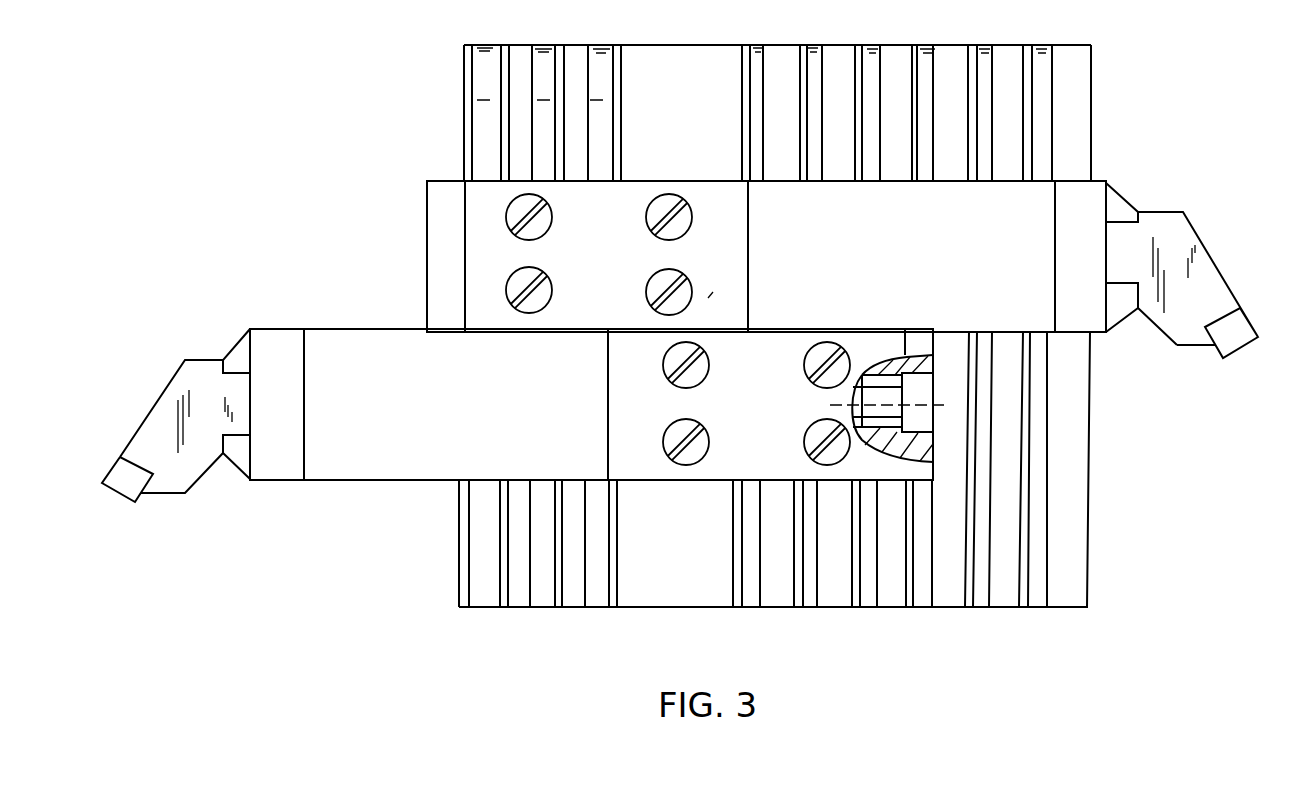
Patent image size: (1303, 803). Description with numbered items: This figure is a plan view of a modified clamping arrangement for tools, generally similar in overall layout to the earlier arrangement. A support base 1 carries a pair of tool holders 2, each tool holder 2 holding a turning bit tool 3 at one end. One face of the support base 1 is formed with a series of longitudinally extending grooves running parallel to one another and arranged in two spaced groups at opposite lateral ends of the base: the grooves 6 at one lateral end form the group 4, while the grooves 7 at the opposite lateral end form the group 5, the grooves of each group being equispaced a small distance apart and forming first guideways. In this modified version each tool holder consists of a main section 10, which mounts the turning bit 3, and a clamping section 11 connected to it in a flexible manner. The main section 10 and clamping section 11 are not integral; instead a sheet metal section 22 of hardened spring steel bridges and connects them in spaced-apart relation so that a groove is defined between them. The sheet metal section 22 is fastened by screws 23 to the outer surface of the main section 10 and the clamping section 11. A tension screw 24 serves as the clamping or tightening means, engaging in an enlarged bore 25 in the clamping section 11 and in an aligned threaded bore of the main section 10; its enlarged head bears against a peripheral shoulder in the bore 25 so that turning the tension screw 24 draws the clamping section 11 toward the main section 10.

The support base 1 is at (675, 587).
The tool holder 2 is at (885, 241).
The turning bit tool 3 is at (1207, 283).
The group of grooves 4 is at (918, 550).
The group of grooves 5 is at (531, 556).
The groove 6 is at (992, 78).
The groove 7 is at (532, 72).
The main section 10 is at (333, 338).
The clamping section 11 is at (918, 343).
The sheet metal section 22 is at (787, 345).
The screws 23 is at (800, 378).
The tension screw 24 is at (923, 397).
The enlarged bore 25 is at (888, 375).